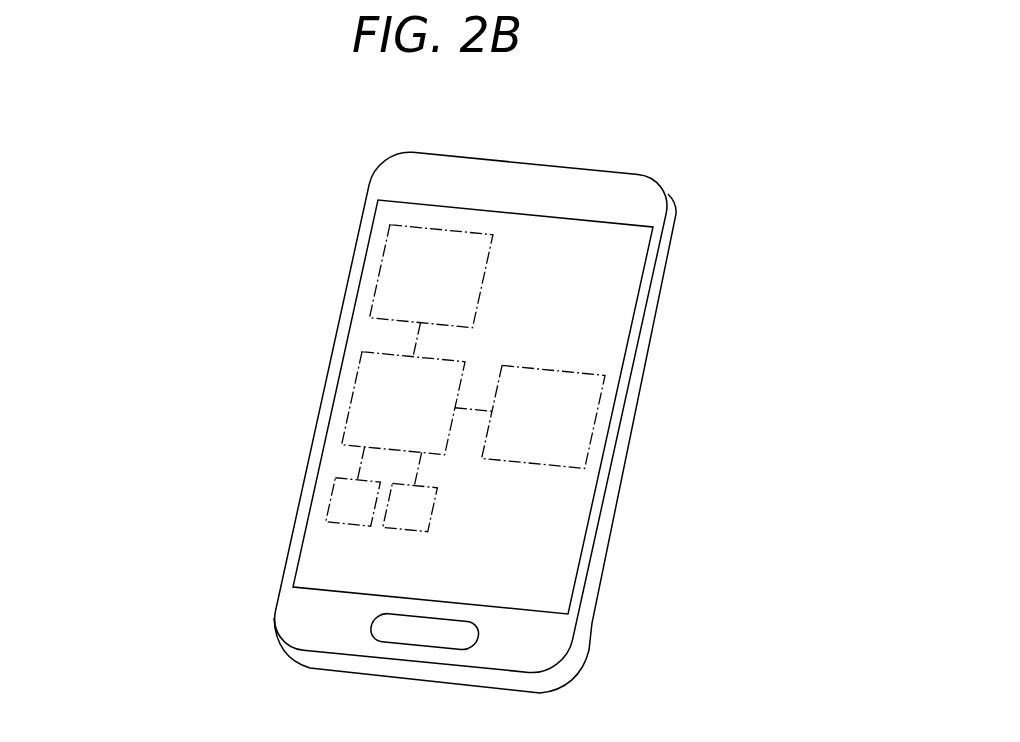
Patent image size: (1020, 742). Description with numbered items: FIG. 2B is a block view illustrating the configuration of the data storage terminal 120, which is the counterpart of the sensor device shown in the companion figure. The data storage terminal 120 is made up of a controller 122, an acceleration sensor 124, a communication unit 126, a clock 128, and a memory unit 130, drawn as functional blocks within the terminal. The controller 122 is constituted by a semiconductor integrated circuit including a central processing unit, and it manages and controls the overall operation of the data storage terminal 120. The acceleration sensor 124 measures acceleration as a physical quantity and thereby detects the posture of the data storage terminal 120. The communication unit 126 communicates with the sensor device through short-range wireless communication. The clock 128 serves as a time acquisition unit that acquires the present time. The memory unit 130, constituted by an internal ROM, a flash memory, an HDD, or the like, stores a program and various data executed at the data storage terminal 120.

The data storage terminal 120 is at (286, 190).
The controller 122 is at (356, 407).
The acceleration sensor 124 is at (432, 513).
The communication unit 126 is at (382, 287).
The clock 128 is at (333, 504).
The memory unit 130 is at (580, 437).